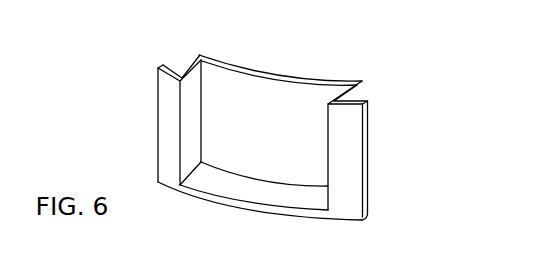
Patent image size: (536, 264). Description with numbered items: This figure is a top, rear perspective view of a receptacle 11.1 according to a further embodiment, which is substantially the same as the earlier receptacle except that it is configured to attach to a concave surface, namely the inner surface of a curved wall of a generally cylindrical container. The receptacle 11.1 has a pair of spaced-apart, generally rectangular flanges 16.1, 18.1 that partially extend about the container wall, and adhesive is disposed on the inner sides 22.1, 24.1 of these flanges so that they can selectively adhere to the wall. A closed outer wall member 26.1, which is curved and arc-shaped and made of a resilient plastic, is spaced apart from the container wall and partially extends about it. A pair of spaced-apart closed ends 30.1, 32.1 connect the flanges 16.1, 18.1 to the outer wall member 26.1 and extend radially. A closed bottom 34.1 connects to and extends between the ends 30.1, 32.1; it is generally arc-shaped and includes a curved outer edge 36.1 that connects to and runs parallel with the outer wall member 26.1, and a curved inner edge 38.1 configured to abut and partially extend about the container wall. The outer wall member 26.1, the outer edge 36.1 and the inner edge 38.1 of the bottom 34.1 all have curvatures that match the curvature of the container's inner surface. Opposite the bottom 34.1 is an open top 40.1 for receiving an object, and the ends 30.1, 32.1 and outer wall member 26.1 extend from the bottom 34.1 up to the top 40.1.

The receptacle 11.1 is at (385, 78).
The flange 16.1 is at (156, 84).
The flange 18.1 is at (358, 132).
The inner side 22.1 is at (168, 147).
The inner side 24.1 is at (352, 182).
The outer wall member 26.1 is at (304, 79).
The closed end 30.1 is at (190, 63).
The closed end 32.1 is at (359, 94).
The bottom 34.1 is at (228, 190).
The outer edge 36.1 is at (225, 170).
The inner edge 38.1 is at (284, 213).
The open top 40.1 is at (237, 57).